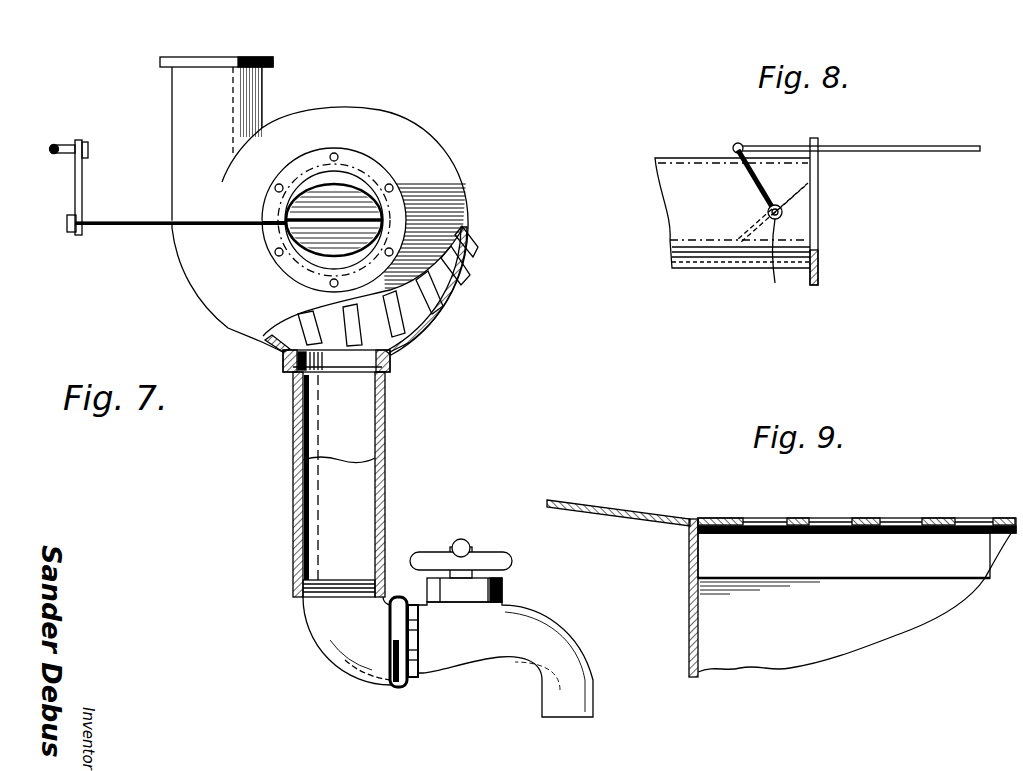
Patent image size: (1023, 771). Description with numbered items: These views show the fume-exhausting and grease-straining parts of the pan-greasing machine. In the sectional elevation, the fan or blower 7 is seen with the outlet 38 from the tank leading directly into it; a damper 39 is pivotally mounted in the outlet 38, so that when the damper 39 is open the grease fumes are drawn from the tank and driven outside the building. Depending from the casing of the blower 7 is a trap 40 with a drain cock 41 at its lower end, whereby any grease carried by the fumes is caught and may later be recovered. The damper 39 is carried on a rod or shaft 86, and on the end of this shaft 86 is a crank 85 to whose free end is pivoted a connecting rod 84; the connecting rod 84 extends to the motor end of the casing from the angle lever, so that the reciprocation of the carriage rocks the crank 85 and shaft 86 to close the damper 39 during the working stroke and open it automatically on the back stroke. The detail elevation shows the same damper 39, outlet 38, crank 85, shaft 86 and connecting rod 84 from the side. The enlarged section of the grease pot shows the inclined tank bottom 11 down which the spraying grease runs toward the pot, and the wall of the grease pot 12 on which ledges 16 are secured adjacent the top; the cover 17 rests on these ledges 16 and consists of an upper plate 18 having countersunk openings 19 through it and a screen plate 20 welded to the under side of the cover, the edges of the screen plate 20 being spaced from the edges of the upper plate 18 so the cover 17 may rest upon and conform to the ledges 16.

In FIG. 7, the fan or blower 7 is at (423, 313).
In FIG. 7, the damper 39 is at (362, 203).
In FIG. 8, the damper 39 is at (812, 198).
In FIG. 7, the trap 40 is at (372, 525).
In FIG. 7, the drain cock 41 is at (501, 628).
In FIG. 7, the connecting rod 84 is at (50, 156).
In FIG. 8, the connecting rod 84 is at (923, 150).
In FIG. 7, the crank 85 is at (82, 200).
In FIG. 8, the crank 85 is at (748, 168).
In FIG. 7, the rod or shaft 86 is at (127, 231).
In FIG. 8, the rod or shaft 86 is at (781, 266).
In FIG. 8, the outlet 38 is at (702, 250).
In FIG. 9, the sloping sheet 11 is at (633, 506).
In FIG. 9, the base body 12 is at (855, 602).
In FIG. 9, the ledges 16 is at (705, 555).
In FIG. 9, the cover 17 is at (857, 512).
In FIG. 9, the upper plate 18 is at (822, 518).
In FIG. 9, the countersunk openings 19 is at (905, 518).
In FIG. 9, the screen plate 20 is at (943, 533).